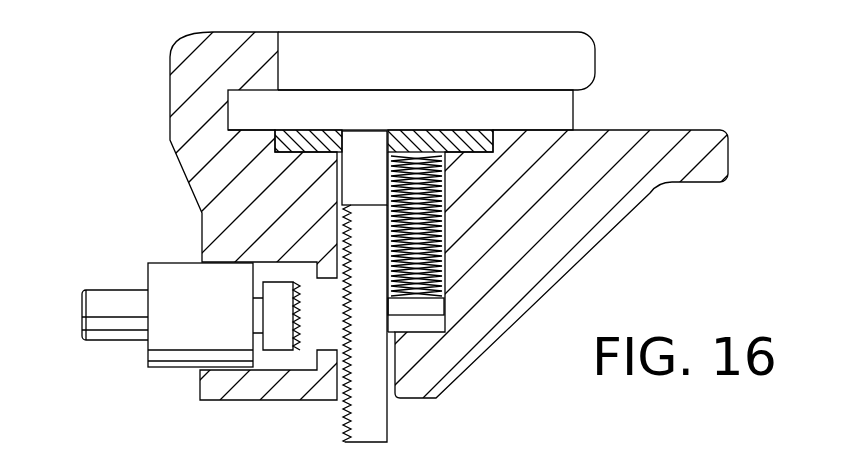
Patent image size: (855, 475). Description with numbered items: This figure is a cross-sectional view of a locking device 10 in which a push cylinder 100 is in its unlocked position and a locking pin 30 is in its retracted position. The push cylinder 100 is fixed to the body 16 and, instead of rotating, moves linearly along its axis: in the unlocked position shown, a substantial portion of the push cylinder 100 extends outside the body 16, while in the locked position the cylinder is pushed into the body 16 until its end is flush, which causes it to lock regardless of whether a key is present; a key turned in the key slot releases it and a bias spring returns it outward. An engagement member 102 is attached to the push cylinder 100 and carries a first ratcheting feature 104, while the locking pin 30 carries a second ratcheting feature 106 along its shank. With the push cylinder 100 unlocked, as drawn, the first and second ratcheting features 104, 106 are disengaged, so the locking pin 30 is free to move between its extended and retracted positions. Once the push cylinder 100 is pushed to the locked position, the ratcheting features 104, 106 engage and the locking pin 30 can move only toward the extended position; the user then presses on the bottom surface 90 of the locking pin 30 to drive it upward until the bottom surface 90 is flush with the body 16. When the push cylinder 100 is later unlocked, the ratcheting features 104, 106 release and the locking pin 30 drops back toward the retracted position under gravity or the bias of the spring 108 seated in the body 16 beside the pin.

The locking device 10 is at (146, 116).
The body 16 is at (698, 147).
The locking pin 30 is at (355, 130).
The bottom surface 90 is at (410, 340).
The push cylinder 100 is at (188, 278).
The engagement member 102 is at (273, 340).
The first ratcheting feature 104 is at (295, 338).
The second ratcheting feature 106 is at (348, 385).
The spring 108 is at (420, 152).